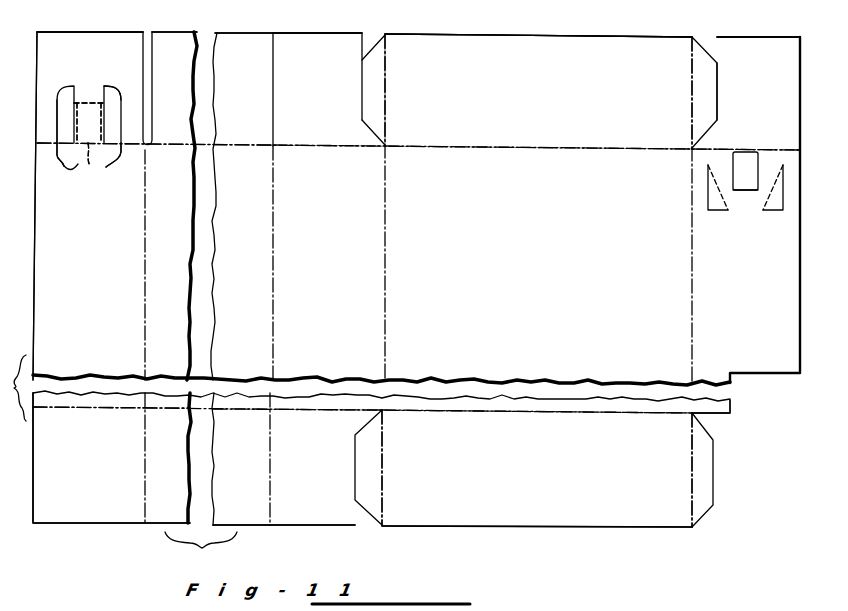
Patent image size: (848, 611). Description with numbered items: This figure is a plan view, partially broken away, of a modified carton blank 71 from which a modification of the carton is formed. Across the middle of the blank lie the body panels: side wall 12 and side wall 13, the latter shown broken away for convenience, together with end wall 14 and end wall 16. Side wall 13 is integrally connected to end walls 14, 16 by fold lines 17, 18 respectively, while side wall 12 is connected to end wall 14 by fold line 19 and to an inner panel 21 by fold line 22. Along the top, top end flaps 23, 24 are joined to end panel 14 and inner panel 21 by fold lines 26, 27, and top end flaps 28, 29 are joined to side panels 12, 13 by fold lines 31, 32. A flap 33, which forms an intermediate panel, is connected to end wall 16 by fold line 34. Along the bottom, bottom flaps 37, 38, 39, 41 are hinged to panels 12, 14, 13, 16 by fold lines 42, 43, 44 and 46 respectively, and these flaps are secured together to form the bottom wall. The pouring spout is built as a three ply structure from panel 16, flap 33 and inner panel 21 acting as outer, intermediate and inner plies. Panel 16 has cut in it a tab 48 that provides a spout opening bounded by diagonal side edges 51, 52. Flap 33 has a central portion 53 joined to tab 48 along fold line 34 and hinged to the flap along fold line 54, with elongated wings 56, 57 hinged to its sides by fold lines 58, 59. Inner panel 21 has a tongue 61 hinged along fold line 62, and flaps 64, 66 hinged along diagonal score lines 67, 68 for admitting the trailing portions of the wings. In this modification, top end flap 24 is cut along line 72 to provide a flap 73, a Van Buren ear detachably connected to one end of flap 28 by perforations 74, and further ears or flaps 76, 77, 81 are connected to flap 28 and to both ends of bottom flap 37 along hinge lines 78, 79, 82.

The side wall 12 is at (546, 268).
The side wall 13 is at (249, 292).
The end wall 14 is at (336, 265).
The end wall 16 is at (102, 257).
The fold line 17 is at (273, 237).
The fold line 18 is at (148, 240).
The fold line 19 is at (388, 231).
The inner panel 21 is at (753, 294).
The fold line 22 is at (692, 254).
The top end flap 23 is at (333, 40).
The top end flap 24 is at (782, 42).
The fold line 26 is at (306, 148).
The fold line 27 is at (720, 148).
The top end flap 28 is at (588, 42).
The top end flap 29 is at (189, 17).
The fold line 31 is at (466, 150).
The fold line 32 is at (258, 148).
The flap 33 is at (80, 35).
The fold line 34 is at (92, 168).
The bottom flap 37 is at (532, 495).
The bottom flap 38 is at (313, 501).
The bottom flap 39 is at (246, 473).
The bottom flap 41 is at (98, 473).
The fold line 42 is at (560, 414).
The fold line 43 is at (337, 413).
The fold line 44 is at (178, 410).
The fold line 46 is at (118, 407).
The tab 48 is at (75, 176).
The diagonal side edge 51 is at (68, 164).
The diagonal side edge 52 is at (102, 170).
The central portion 53 is at (88, 112).
The fold line 54 is at (90, 103).
The wing 56 is at (65, 126).
The wing 57 is at (112, 125).
The fold line 58 is at (70, 116).
The fold line 59 is at (112, 110).
The tongue 61 is at (745, 162).
The fold line 62 is at (742, 192).
The flap 64 is at (712, 202).
The flap 66 is at (788, 212).
The diagonal score line 67 is at (708, 187).
The diagonal score line 68 is at (768, 212).
The carton blank 71 is at (733, 416).
The cut line 72 is at (719, 103).
The flap 73 is at (717, 80).
The perforations 74 is at (692, 90).
The flap 76 is at (368, 77).
The flap 77 is at (364, 466).
The hinge line 78 is at (392, 85).
The hinge line 79 is at (386, 466).
The flap 81 is at (713, 480).
The hinge line 82 is at (688, 464).